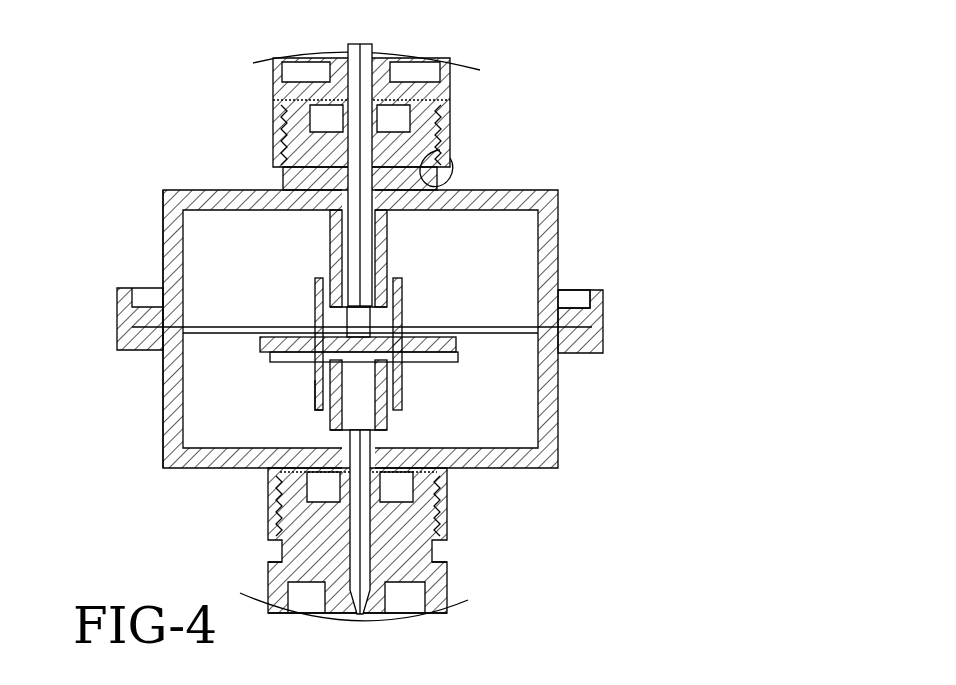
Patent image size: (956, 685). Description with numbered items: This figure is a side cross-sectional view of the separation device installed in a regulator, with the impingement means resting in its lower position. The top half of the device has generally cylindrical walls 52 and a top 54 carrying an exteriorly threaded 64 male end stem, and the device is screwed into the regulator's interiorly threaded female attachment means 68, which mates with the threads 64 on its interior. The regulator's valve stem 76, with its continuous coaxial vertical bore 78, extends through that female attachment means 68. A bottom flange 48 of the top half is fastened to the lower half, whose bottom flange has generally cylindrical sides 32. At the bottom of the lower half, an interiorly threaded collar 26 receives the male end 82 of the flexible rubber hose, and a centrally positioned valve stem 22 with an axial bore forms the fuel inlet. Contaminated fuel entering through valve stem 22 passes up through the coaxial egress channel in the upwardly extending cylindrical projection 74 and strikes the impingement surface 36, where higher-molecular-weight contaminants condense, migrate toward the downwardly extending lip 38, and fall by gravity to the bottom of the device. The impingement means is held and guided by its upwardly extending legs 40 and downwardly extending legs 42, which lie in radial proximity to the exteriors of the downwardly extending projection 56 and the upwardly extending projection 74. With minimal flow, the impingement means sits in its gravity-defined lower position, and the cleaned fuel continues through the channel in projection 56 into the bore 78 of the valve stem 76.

The valve stem 22 is at (365, 617).
The interiorly threaded collar 26 is at (448, 512).
The cylindrical sides 32 is at (603, 305).
The impingement surface 36 is at (262, 342).
The downwardly extending lip 38 is at (440, 362).
The upwardly extending legs 40 is at (315, 295).
The downwardly extending legs 42 is at (317, 390).
The bottom flange 48 is at (572, 305).
The cylindrical walls 52 is at (163, 222).
The top 54 is at (533, 190).
The downwardly extending cylindrical projection 56 is at (387, 233).
The exterior threads 64 is at (455, 168).
The interiorly threaded female attachment means 68 is at (272, 107).
The upwardly extending cylindrical projection 74 is at (329, 412).
The valve stem 76 is at (393, 72).
The coaxial vertical bore 78 is at (357, 58).
The male end 82 is at (450, 578).